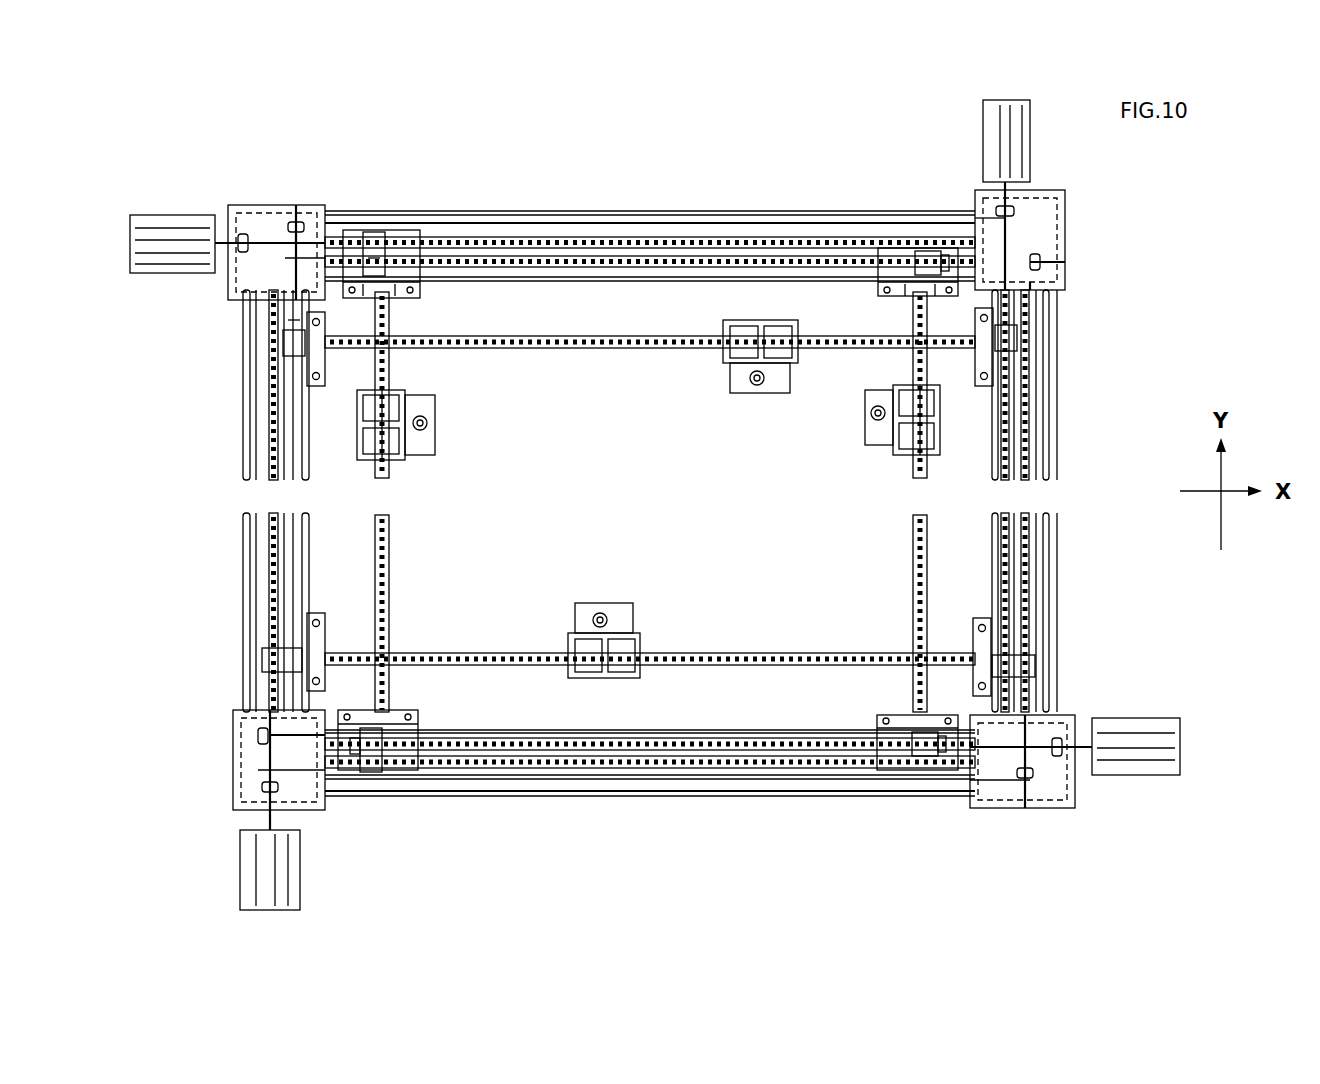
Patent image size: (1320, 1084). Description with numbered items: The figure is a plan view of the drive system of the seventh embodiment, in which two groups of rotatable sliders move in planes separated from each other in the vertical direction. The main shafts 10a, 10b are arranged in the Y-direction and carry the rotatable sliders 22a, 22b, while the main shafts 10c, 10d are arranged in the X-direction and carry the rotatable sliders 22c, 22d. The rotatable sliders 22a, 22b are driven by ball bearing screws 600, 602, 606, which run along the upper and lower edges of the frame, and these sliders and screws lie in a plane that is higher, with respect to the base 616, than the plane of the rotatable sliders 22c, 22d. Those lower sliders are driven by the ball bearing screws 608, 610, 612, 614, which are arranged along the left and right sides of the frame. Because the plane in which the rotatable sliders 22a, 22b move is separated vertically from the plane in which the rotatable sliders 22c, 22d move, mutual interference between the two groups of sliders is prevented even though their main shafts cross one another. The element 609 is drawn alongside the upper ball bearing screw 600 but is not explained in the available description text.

The ball bearing screw 600 is at (490, 236).
The upper second toothed rack 609 is at (655, 260).
The main shaft 10c is at (568, 350).
The main shaft 10d is at (500, 650).
The main shaft 10a is at (390, 620).
The main shaft 10b is at (913, 597).
The rotatable slider 22a is at (410, 462).
The rotatable slider 22b is at (888, 455).
The rotatable slider 22c is at (717, 362).
The rotatable slider 22d is at (640, 612).
The ball bearing screw 602 is at (600, 768).
The ball bearing screw 606 is at (737, 750).
The base 616 is at (895, 800).
The ball bearing screw 608 is at (272, 428).
The ball bearing screw 612 is at (270, 540).
The ball bearing screw 610 is at (1015, 410).
The ball bearing screw 614 is at (1030, 590).